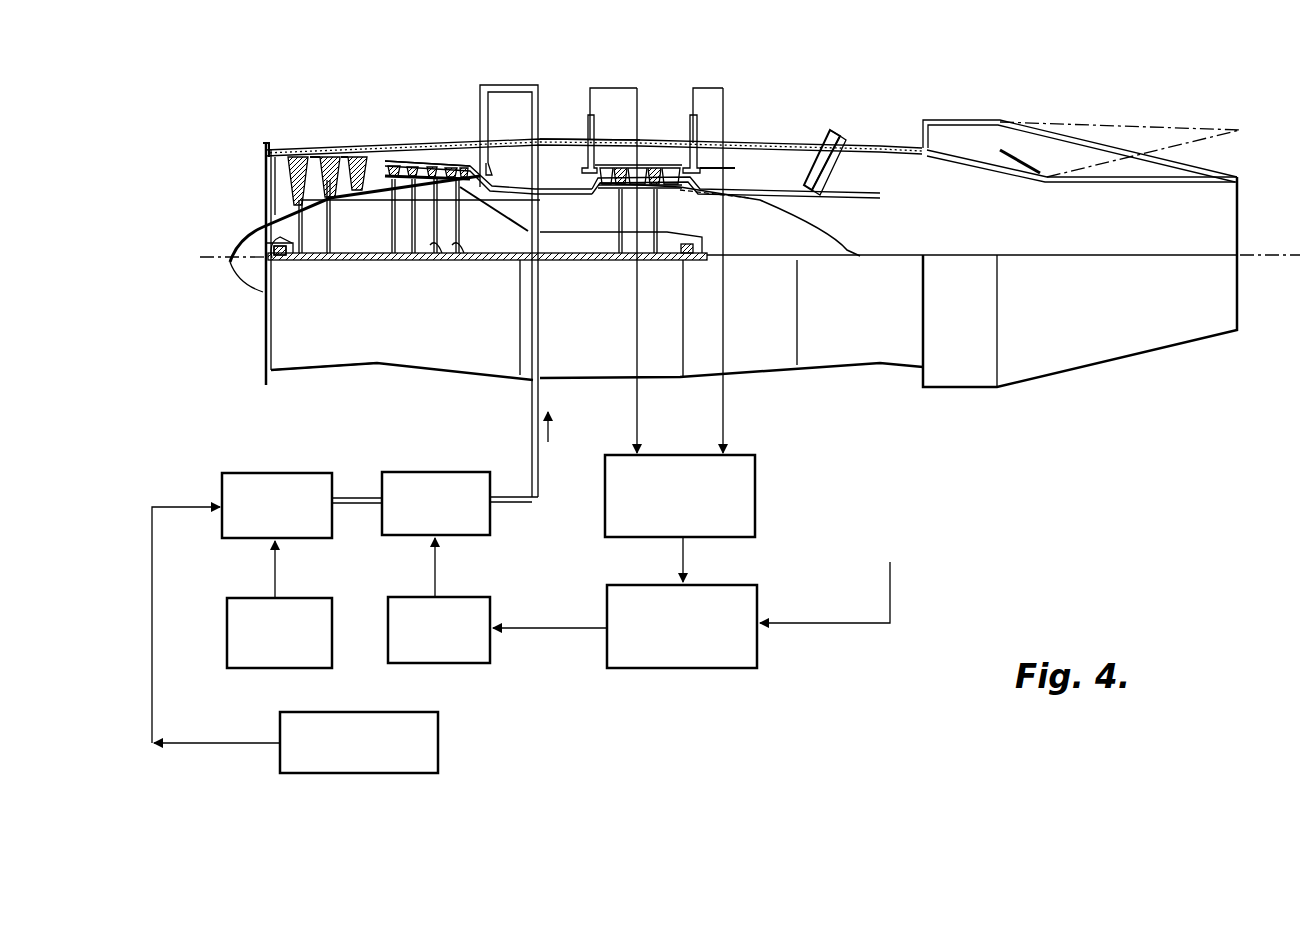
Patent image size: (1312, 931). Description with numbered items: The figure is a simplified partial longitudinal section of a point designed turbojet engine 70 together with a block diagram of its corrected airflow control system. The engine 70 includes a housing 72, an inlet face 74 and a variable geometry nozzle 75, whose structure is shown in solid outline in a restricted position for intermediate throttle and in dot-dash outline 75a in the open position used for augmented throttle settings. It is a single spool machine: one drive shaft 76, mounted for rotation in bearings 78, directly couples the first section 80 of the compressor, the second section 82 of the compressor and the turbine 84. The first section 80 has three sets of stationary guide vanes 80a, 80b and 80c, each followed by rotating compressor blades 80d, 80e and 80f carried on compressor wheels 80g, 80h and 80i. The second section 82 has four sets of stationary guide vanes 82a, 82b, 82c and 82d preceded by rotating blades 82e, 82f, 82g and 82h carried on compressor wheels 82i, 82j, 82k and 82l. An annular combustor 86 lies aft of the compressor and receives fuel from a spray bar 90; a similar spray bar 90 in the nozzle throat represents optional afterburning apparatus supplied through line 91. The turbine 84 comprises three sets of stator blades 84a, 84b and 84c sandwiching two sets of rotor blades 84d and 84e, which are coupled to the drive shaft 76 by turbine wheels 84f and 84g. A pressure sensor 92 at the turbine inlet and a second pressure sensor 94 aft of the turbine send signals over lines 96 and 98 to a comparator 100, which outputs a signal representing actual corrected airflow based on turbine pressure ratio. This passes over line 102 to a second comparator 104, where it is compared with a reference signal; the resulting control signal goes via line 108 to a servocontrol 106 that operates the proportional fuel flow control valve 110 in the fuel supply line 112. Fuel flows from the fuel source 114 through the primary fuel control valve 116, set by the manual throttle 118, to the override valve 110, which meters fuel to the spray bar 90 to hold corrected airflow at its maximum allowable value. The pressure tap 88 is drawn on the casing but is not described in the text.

The engine 70 is at (795, 378).
The housing 72 is at (448, 372).
The inlet face 74 is at (264, 152).
The variable geometry nozzle 75 is at (1240, 190).
The open nozzle position 75a is at (1100, 120).
The drive shaft 76 is at (548, 262).
The bearings 78 is at (285, 262).
The first section of the compressor 80 is at (262, 190).
The stationary guide vane 80a is at (288, 150).
The stationary guide vane 80b is at (330, 150).
The stationary guide vane 80c is at (355, 152).
The rotating compressor blade 80d is at (288, 186).
The rotating compressor blade 80e is at (326, 160).
The rotating compressor blade 80f is at (290, 262).
The compressor wheel 80g is at (284, 218).
The compressor wheel 80h is at (312, 262).
The compressor wheel 80i is at (343, 262).
The second section of the compressor 82 is at (380, 180).
The stationary guide vane 82a is at (402, 165).
The stationary guide vane 82b is at (420, 165).
The stationary guide vane 82c is at (438, 165).
The stationary guide vane 82d is at (462, 166).
The rotating blade 82e is at (400, 162).
The rotating blade 82f is at (458, 188).
The rotating blade 82g is at (445, 188).
The rotating blade 82h is at (486, 205).
The compressor wheel 82i is at (407, 262).
The compressor wheel 82j is at (420, 262).
The compressor wheel 82k is at (445, 262).
The compressor wheel 82l is at (470, 262).
The turbine 84 is at (600, 200).
The stator blade 84a is at (598, 180).
The stator blade 84b is at (645, 166).
The stator blade 84c is at (702, 186).
The rotor blade 84d is at (630, 165).
The rotor blade 84e is at (672, 188).
The turbine wheel 84f is at (612, 258).
The turbine wheel 84g is at (650, 258).
The annular combustor 86 is at (565, 137).
The compressor discharge pressure tap 88 is at (495, 140).
The spray bar 90 is at (840, 146).
The line 91 is at (832, 120).
The pressure sensor 92 is at (600, 125).
The second pressure sensor 94 is at (722, 150).
The line 96 is at (640, 428).
The line 98 is at (726, 428).
The comparator 100 is at (757, 500).
The line 102 is at (683, 557).
The second comparator 104 is at (759, 660).
The servocontrol 106 is at (408, 595).
The line 108 is at (535, 640).
The proportional fuel flow control valve 110 is at (400, 470).
The fuel supply line 112 is at (538, 456).
The fuel source 114 is at (325, 710).
The primary fuel control valve 116 is at (250, 455).
The manual throttle 118 is at (240, 596).